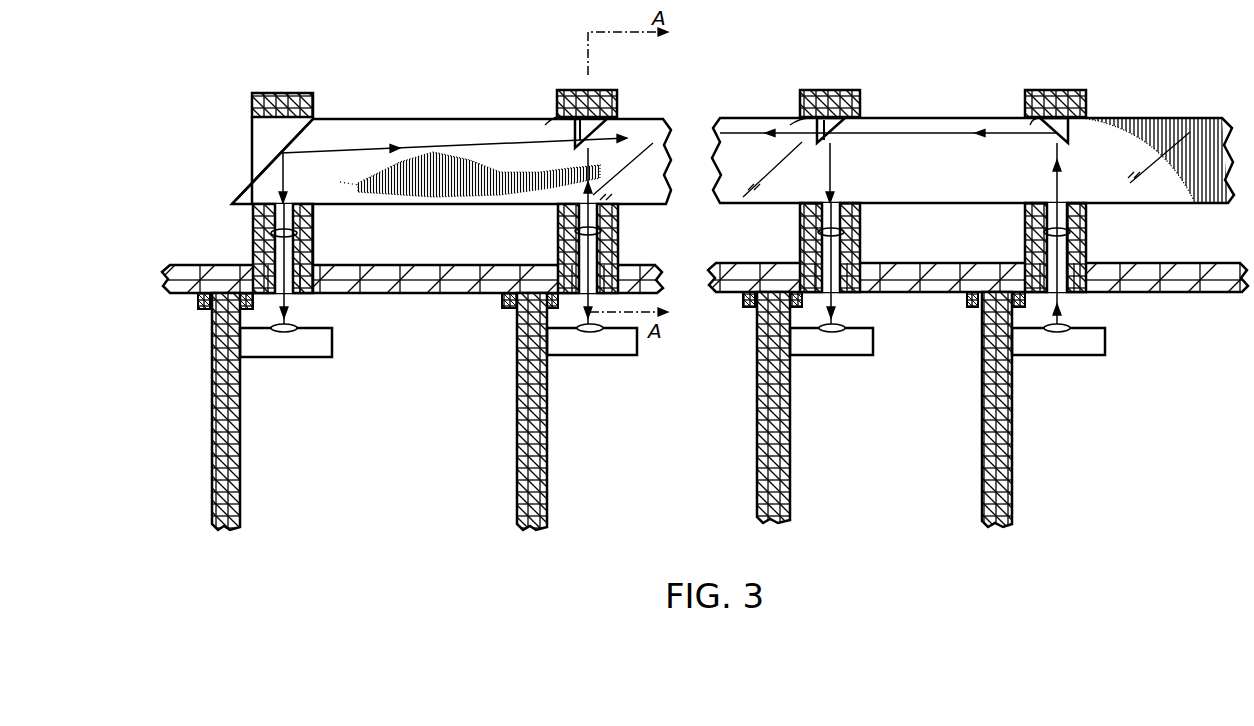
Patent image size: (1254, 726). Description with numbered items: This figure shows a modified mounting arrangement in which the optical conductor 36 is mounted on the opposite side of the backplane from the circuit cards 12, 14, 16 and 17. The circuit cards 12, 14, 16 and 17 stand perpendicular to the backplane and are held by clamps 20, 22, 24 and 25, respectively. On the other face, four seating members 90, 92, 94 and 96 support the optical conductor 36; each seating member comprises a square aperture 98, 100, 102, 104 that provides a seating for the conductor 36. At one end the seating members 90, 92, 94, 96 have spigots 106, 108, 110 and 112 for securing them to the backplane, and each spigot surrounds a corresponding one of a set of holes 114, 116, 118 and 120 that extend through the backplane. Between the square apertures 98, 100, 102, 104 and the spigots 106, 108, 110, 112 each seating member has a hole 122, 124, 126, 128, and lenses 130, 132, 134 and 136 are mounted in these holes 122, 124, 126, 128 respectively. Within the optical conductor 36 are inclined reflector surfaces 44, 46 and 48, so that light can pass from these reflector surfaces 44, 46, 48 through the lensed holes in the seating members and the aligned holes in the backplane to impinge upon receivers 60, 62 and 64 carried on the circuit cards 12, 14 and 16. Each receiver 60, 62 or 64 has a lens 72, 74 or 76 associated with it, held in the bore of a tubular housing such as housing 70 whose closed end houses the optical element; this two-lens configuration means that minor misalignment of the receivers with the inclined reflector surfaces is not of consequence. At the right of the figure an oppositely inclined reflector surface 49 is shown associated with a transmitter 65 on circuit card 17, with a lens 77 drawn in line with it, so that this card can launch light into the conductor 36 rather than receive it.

The circuit card 12 is at (243, 501).
The circuit card 14 is at (548, 500).
The circuit card 16 is at (790, 503).
The circuit card 17 is at (1012, 505).
The clamp 20 is at (200, 312).
The clamp 22 is at (506, 310).
The clamp 24 is at (745, 307).
The clamp 25 is at (970, 307).
The optical conductor 36 is at (293, 197).
The reflector surface 44 is at (300, 133).
The reflector surface 46 is at (593, 135).
The reflector surface 48 is at (860, 101).
The oppositely inclined reflector surface 49 is at (1050, 125).
The receiver 60 is at (298, 360).
The receiver 62 is at (600, 357).
The receiver 64 is at (828, 357).
The transmitter 65 is at (1058, 357).
The tubular housing 70 is at (582, 123).
The lens 72 is at (298, 325).
The lens 74 is at (585, 325).
The lens 76 is at (845, 325).
The lens 77 is at (1093, 357).
The seating member 90 is at (252, 103).
The seating member 92 is at (557, 97).
The seating member 94 is at (800, 100).
The seating member 96 is at (1025, 100).
The square aperture 98 is at (276, 119).
The square aperture 100 is at (545, 125).
The square aperture 102 is at (790, 125).
The square aperture 104 is at (1030, 125).
The spigot 106 is at (310, 262).
The spigot 108 is at (618, 250).
The spigot 110 is at (855, 250).
The spigot 112 is at (1088, 250).
The hole 114 is at (292, 300).
The hole 116 is at (558, 258).
The hole 118 is at (835, 300).
The hole 120 is at (1068, 298).
The hole 122 is at (262, 240).
The hole 124 is at (560, 240).
The hole 126 is at (812, 242).
The hole 128 is at (1045, 243).
The lens 130 is at (300, 228).
The lens 132 is at (618, 222).
The lens 134 is at (860, 223).
The lens 136 is at (1086, 224).